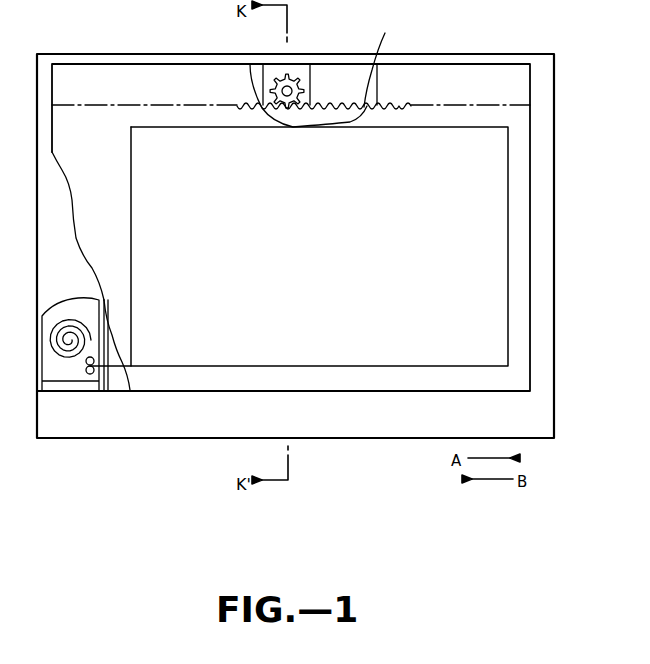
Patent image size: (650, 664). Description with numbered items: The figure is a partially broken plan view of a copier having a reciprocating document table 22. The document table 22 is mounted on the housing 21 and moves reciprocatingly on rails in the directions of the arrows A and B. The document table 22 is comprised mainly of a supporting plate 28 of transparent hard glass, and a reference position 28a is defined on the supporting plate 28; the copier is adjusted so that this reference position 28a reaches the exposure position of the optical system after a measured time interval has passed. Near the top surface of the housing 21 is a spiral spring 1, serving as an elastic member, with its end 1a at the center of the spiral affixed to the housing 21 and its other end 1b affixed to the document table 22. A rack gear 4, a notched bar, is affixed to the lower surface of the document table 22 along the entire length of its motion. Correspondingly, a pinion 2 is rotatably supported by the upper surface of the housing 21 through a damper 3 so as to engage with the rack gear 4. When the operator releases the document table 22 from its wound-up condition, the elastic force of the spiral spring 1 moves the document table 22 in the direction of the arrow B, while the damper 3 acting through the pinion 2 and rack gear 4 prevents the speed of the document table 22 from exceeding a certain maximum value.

The spiral spring 1 is at (74, 362).
The end of spiral spring at the center of the spiral 1a is at (69, 338).
The other end of spiral spring 1b is at (118, 382).
The pinion 2 is at (280, 78).
The damper 3 is at (314, 71).
The rack gear 4 is at (377, 59).
The housing 21 is at (556, 360).
The document table 22 is at (531, 92).
The supporting plate 28 is at (510, 268).
The reference position 28a is at (132, 172).